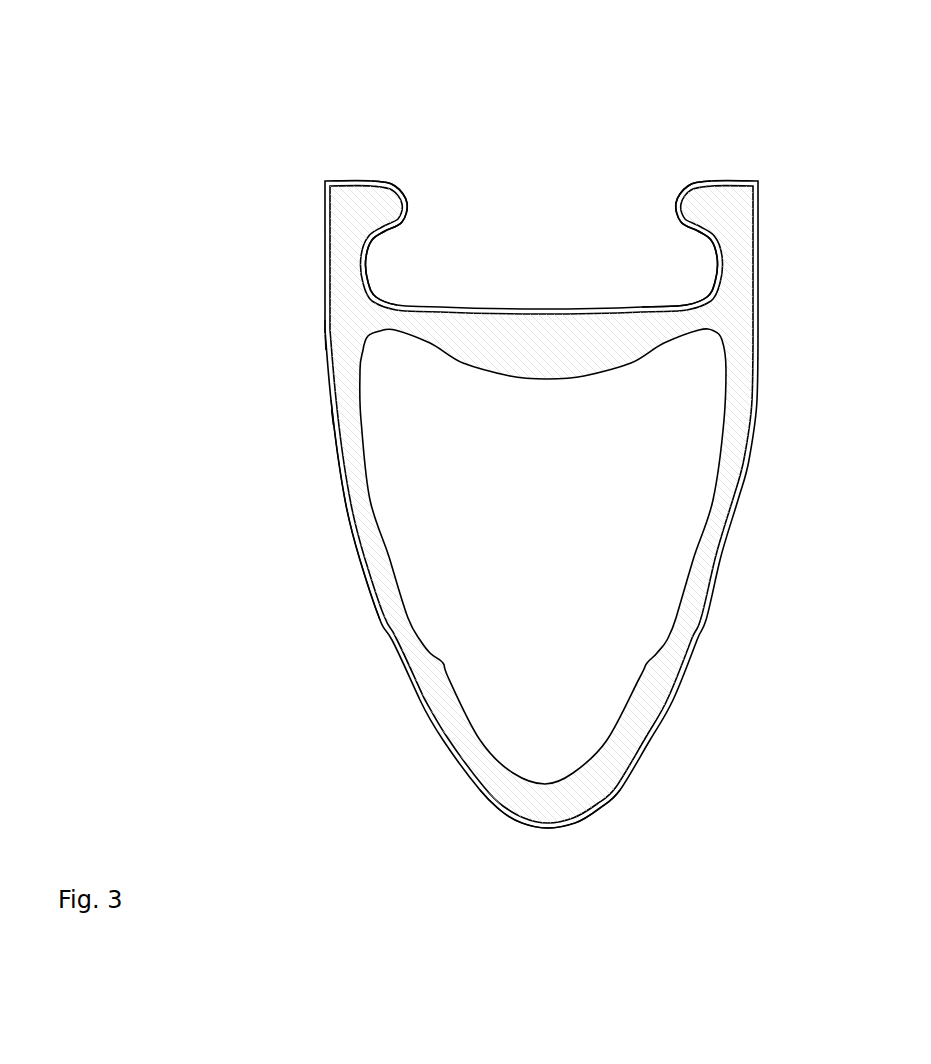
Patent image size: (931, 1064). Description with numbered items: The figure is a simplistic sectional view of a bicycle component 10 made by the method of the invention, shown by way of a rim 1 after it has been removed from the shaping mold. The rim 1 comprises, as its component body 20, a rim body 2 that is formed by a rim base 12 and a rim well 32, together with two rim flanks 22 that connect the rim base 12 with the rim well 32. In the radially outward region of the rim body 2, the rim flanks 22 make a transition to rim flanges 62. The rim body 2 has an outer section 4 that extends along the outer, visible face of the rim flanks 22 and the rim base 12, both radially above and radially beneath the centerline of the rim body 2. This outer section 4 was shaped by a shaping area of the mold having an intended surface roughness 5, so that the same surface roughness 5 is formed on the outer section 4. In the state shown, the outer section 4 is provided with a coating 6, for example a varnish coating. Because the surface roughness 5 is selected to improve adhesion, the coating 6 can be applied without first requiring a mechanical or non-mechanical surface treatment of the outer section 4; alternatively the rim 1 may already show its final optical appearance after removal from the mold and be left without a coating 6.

The bicycle component 10 is at (127, 50).
The rim 1 is at (324, 198).
The rim body 2 is at (338, 240).
The outer section 4 is at (325, 327).
The surface roughness 5 is at (325, 343).
The coating 6 is at (325, 417).
The rim flanks 22 is at (360, 490).
The rim base 12 is at (543, 813).
The component body 20 is at (367, 176).
The rim flanges 62 is at (720, 203).
The rim well 32 is at (560, 335).